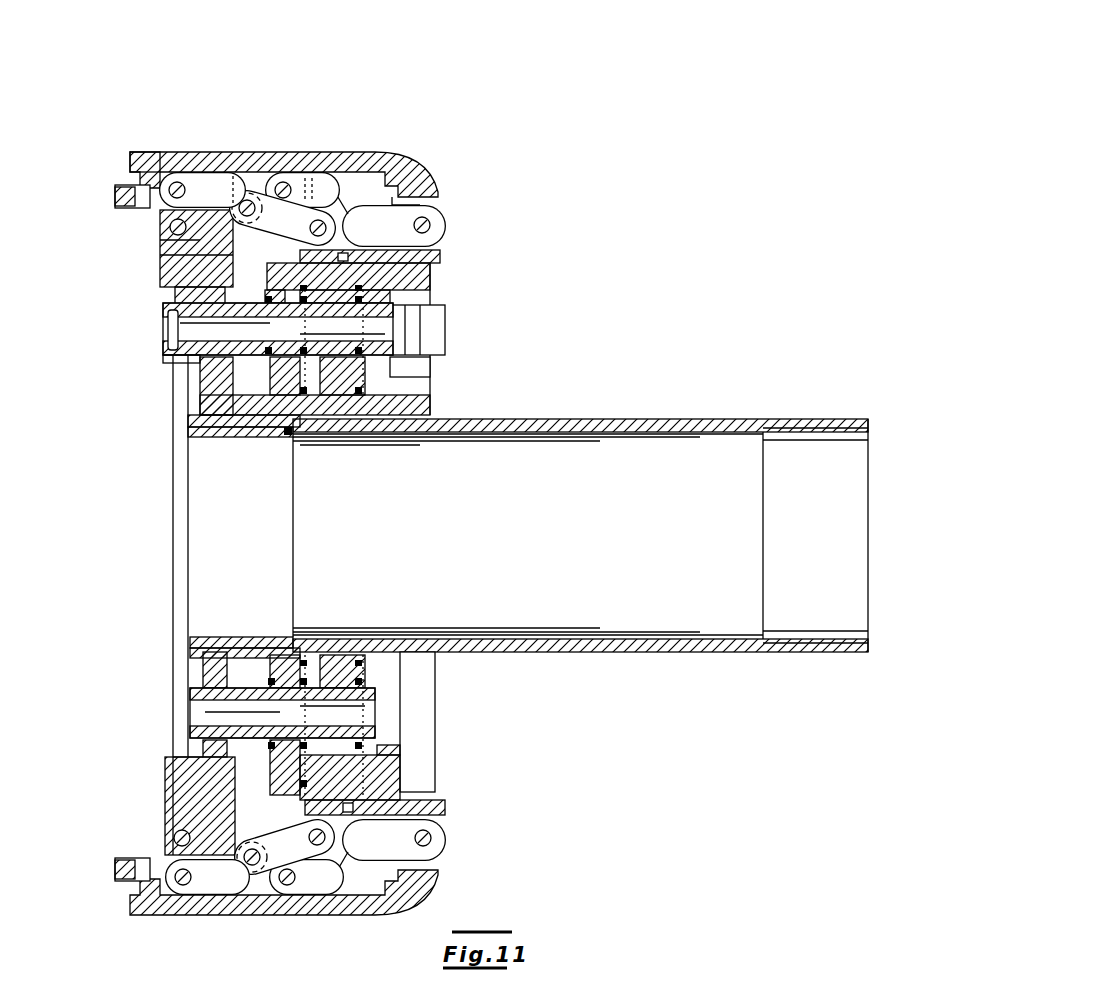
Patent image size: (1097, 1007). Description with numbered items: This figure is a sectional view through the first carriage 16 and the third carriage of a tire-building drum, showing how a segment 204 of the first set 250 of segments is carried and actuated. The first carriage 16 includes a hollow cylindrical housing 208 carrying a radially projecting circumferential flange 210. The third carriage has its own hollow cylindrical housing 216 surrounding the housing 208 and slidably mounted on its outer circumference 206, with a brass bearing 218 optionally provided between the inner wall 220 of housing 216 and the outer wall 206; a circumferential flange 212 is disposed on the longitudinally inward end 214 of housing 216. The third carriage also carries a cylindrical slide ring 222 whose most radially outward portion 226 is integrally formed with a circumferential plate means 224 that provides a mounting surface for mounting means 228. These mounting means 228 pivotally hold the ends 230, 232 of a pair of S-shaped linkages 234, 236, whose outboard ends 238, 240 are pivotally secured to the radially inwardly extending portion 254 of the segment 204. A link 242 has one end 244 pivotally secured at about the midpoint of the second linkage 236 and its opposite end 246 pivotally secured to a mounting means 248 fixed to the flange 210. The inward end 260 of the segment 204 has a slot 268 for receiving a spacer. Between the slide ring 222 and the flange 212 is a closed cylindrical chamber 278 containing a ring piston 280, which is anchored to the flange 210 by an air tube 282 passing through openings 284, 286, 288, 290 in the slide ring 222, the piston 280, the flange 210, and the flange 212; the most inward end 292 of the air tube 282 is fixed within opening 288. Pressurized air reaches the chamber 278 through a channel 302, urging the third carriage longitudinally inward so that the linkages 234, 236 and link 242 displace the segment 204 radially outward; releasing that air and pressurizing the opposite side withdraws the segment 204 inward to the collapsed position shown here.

The first set of segments 250 is at (447, 103).
The segment 204 is at (378, 153).
The outer circumference of cylindrical housing 206 is at (538, 420).
The hollow cylindrical housing 208 is at (640, 420).
The circumferential flange 210 is at (200, 385).
The circumferential flange 212 is at (205, 250).
The longitudinally inward end 214 is at (240, 427).
The hollow cylindrical housing 216 is at (415, 401).
The brass bearing 218 is at (410, 430).
The inner wall 220 is at (375, 432).
The cylindrical slide ring 222 is at (385, 376).
The circumferential plate means 224 is at (430, 272).
The most radially outward portion of slide ring 226 is at (367, 773).
The mounting means 228 is at (440, 258).
The end of linkage 230 is at (435, 223).
The end of linkage 232 is at (392, 162).
The first linkage 234 is at (360, 207).
The second linkage 236 is at (236, 172).
The outboard end of linkage 238 is at (305, 178).
The outboard end of linkage 240 is at (180, 182).
The link 242 is at (160, 240).
The end of link 244 is at (115, 196).
The opposite end of link 246 is at (160, 234).
The mounting means 248 is at (160, 255).
The radially inwardly extending portion 254 is at (290, 176).
The inward end of segment 260 is at (148, 153).
The slot 268 is at (140, 180).
The closed cylindrical chamber 278 is at (290, 434).
The ring piston 280 is at (338, 430).
The air tube 282 is at (445, 316).
The opening 284 is at (395, 359).
The opening 286 is at (390, 297).
The opening 288 is at (200, 358).
The opening 290 is at (268, 382).
The most inward end of air tube 292 is at (168, 316).
The channel 302 is at (300, 323).
The first carriage 16 is at (190, 420).